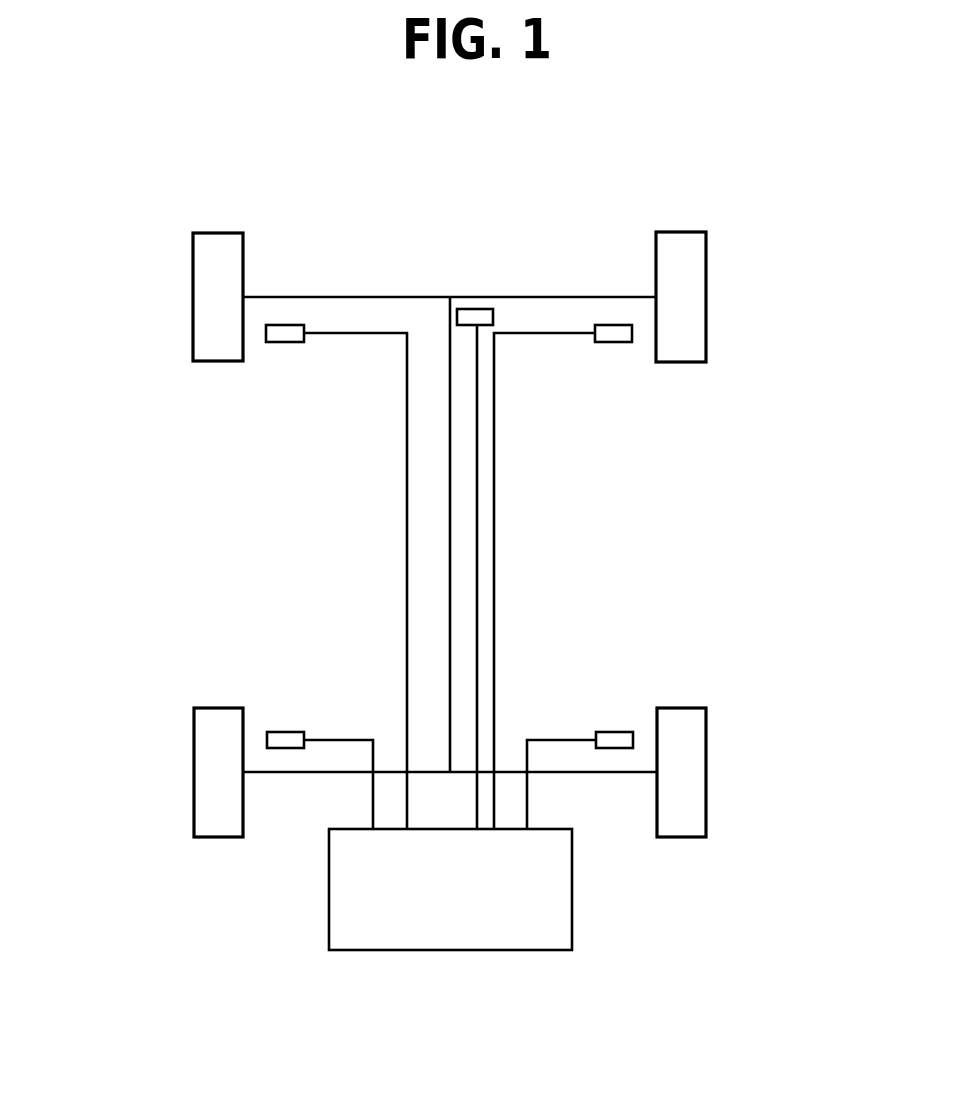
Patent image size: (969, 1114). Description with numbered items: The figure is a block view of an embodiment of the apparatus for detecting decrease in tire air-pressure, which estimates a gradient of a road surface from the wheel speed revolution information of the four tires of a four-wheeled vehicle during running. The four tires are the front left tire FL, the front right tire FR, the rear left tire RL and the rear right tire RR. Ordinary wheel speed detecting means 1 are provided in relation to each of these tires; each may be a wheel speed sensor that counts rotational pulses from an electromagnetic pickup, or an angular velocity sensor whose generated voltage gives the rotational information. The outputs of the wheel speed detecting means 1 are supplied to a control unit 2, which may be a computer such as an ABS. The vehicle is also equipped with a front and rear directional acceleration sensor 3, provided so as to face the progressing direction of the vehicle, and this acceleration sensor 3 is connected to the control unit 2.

The wheel speed detecting means 1 is at (277, 333).
The control unit 2 is at (559, 932).
The acceleration sensor 3 is at (473, 297).
The front left tire FL is at (207, 270).
The front right tire FR is at (690, 273).
The rear left tire RL is at (208, 757).
The rear right tire RR is at (692, 760).